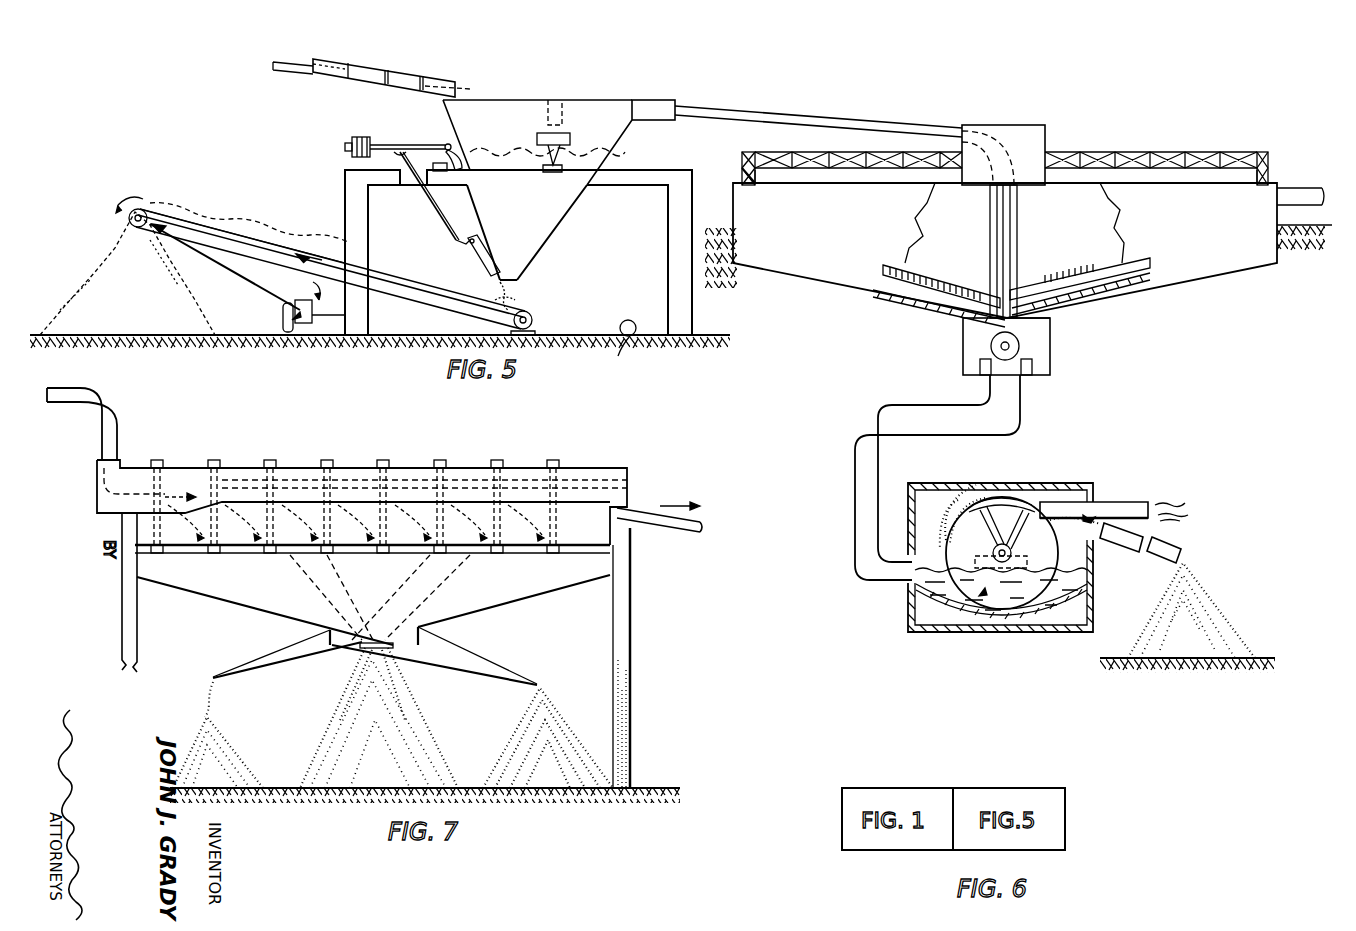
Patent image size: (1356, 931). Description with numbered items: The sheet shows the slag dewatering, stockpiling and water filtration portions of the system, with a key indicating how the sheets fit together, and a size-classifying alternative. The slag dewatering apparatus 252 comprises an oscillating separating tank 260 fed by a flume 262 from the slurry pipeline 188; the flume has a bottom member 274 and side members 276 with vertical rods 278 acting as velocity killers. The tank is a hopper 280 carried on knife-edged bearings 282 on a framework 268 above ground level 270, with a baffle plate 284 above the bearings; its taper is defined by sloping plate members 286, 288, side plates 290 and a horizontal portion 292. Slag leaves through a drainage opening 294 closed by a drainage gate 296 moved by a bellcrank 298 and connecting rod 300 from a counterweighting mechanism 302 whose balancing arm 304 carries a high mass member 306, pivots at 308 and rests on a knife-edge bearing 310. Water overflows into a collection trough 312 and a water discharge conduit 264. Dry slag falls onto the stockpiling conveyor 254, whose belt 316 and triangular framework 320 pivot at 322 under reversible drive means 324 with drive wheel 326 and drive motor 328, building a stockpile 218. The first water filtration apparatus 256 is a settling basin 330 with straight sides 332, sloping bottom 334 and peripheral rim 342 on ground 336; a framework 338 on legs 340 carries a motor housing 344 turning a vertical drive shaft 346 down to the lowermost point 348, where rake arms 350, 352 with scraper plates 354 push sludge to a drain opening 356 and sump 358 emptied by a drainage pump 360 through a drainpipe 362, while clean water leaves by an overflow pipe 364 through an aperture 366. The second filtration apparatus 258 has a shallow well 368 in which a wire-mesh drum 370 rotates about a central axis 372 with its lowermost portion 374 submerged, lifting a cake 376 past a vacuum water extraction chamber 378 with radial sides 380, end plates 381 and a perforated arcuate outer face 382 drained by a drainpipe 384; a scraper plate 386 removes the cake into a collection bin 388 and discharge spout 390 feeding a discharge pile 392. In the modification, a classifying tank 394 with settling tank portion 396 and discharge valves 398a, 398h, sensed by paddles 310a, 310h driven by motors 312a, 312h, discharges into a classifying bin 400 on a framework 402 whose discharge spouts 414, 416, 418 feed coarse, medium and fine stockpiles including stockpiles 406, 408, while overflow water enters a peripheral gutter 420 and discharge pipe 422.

In FIG. 5, the slurry pipeline 188 is at (278, 73).
In FIG. 7, the slurry pipeline 188 is at (84, 390).
In FIG. 5, the stockpile 218 is at (88, 250).
In FIG. 5, the slag dewatering apparatus 252 is at (618, 146).
In FIG. 5, the stockpiling conveyor 254 is at (200, 221).
In FIG. 5, the first water filtration apparatus 256 is at (1082, 145).
In FIG. 7, the first water filtration apparatus 256 is at (760, 508).
In FIG. 6, the second filtration apparatus 258 is at (999, 632).
In FIG. 5, the oscillating separating tank 260 is at (522, 94).
In FIG. 5, the flume 262 is at (410, 72).
In FIG. 5, the water discharge conduit 264 is at (742, 110).
In FIG. 5, the framework 268 is at (668, 290).
In FIG. 5, the ground level 270 is at (641, 348).
In FIG. 5, the bottom member 274 is at (334, 74).
In FIG. 5, the side members 276 is at (372, 80).
In FIG. 5, the vertical rods 278 is at (470, 89).
In FIG. 5, the hopper 280 is at (548, 204).
In FIG. 5, the knife-edged bearings 282 is at (572, 142).
In FIG. 5, the baffle plate 284 is at (566, 104).
In FIG. 5, the sloping plate member 286 is at (440, 213).
In FIG. 5, the sloping plate member 288 is at (565, 225).
In FIG. 5, the side plates 290 is at (546, 248).
In FIG. 5, the horizontal portion 292 is at (520, 296).
In FIG. 5, the drainage opening 294 is at (498, 260).
In FIG. 5, the drainage gate 296 is at (480, 270).
In FIG. 5, the bellcrank 298 is at (458, 244).
In FIG. 5, the connecting rod 300 is at (425, 186).
In FIG. 5, the counterweighting mechanism 302 is at (408, 142).
In FIG. 5, the balancing arm 304 is at (384, 145).
In FIG. 5, the high mass member 306 is at (345, 147).
In FIG. 5, the pivot 308 is at (462, 150).
In FIG. 5, the knife-edge bearing 310 is at (466, 156).
In FIG. 5, the collection trough 312 is at (653, 100).
In FIG. 5, the belt 316 is at (249, 237).
In FIG. 5, the framework 320 is at (240, 277).
In FIG. 5, the pivot point 322 is at (524, 335).
In FIG. 5, the reversible drive means 324 is at (314, 299).
In FIG. 5, the drive wheel 326 is at (284, 334).
In FIG. 5, the drive motor 328 is at (308, 334).
In FIG. 5, the settling basin 330 is at (1195, 283).
In FIG. 5, the straight sides 332 is at (1265, 182).
In FIG. 5, the sloping bottom 334 is at (812, 287).
In FIG. 5, the ground 336 is at (1292, 250).
In FIG. 5, the framework 338 is at (1190, 150).
In FIG. 5, the legs 340 is at (742, 158).
In FIG. 5, the peripheral rim 342 is at (760, 183).
In FIG. 5, the motor housing 344 is at (1010, 125).
In FIG. 5, the vertical drive shaft 346 is at (1018, 205).
In FIG. 5, the lowermost point 348 is at (978, 323).
In FIG. 5, the rake arm 350 is at (922, 268).
In FIG. 5, the rake arm 352 is at (1083, 270).
In FIG. 5, the scraper plates 354 is at (915, 314).
In FIG. 5, the drain opening 356 is at (1045, 323).
In FIG. 5, the sump 358 is at (1050, 363).
In FIG. 5, the drainage pump 360 is at (990, 347).
In FIG. 6, the drainpipe 362 is at (962, 477).
In FIG. 5, the overflow pipe 364 is at (1292, 188).
In FIG. 5, the aperture 366 is at (1275, 210).
In FIG. 6, the aperture 366 is at (936, 633).
In FIG. 6, the shallow well 368 is at (910, 611).
In FIG. 6, the drum 370 is at (1082, 565).
In FIG. 6, the central axis 372 is at (1022, 503).
In FIG. 6, the lowermost portion 374 is at (1026, 616).
In FIG. 6, the cake 376 is at (962, 500).
In FIG. 6, the vacuum water extraction chamber 378 is at (990, 493).
In FIG. 6, the radial sides 380 is at (1012, 551).
In FIG. 6, the end plates 381 is at (952, 530).
In FIG. 6, the perforated arcuate outer face 382 is at (1012, 492).
In FIG. 6, the drainpipe 384 is at (1126, 501).
In FIG. 6, the scraper plate 386 is at (1093, 558).
In FIG. 6, the collection bin 388 is at (1093, 513).
In FIG. 6, the discharge spout 390 is at (1183, 547).
In FIG. 7, the discharge spout 390 is at (662, 467).
In FIG. 6, the discharge pile 392 is at (1225, 620).
In FIG. 7, the classifying tank 394 is at (372, 467).
In FIG. 7, the settling tank portion 396 is at (472, 465).
In FIG. 7, the discharge valve 398a is at (158, 554).
In FIG. 7, the discharge valve 398h is at (556, 555).
In FIG. 7, the classifying bin 400 is at (490, 588).
In FIG. 7, the framework 402 is at (122, 608).
In FIG. 7, the stockpile 406 is at (336, 713).
In FIG. 7, the stockpile 408 is at (188, 724).
In FIG. 7, the paddle 310a is at (150, 521).
In FIG. 7, the paddle 310h is at (560, 540).
In FIG. 7, the motor 312a is at (160, 458).
In FIG. 7, the motor 312h is at (558, 458).
In FIG. 7, the discharge spout 414 is at (514, 673).
In FIG. 7, the discharge spout 416 is at (388, 650).
In FIG. 7, the discharge spout 418 is at (246, 660).
In FIG. 7, the peripheral gutter 420 is at (600, 500).
In FIG. 7, the discharge pipe 422 is at (655, 526).